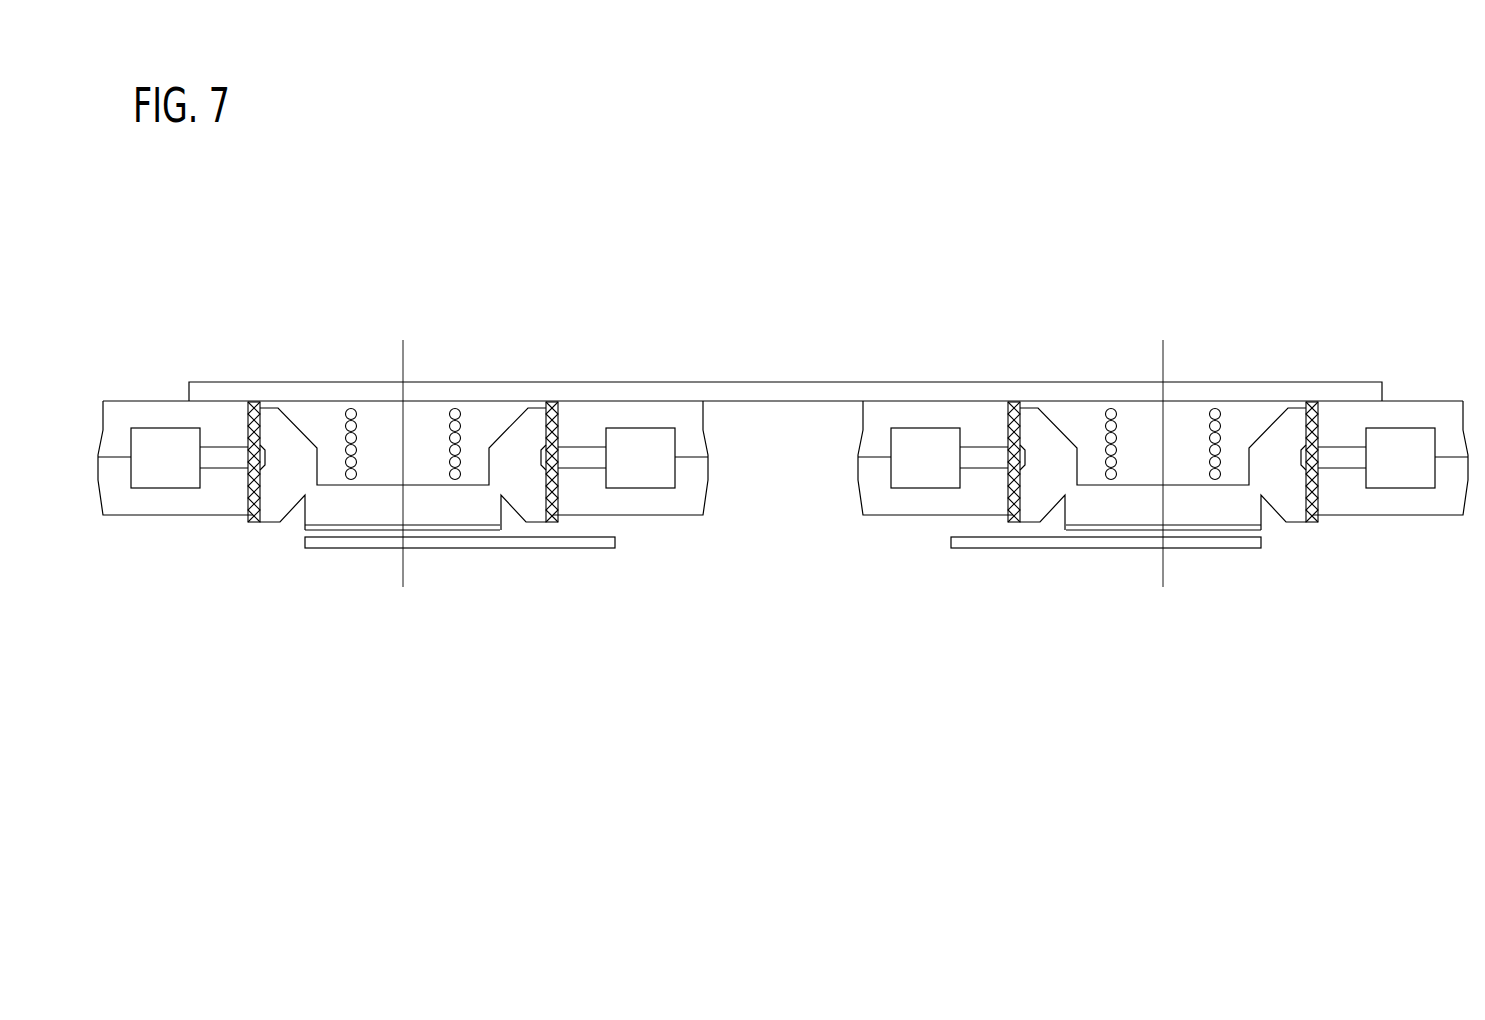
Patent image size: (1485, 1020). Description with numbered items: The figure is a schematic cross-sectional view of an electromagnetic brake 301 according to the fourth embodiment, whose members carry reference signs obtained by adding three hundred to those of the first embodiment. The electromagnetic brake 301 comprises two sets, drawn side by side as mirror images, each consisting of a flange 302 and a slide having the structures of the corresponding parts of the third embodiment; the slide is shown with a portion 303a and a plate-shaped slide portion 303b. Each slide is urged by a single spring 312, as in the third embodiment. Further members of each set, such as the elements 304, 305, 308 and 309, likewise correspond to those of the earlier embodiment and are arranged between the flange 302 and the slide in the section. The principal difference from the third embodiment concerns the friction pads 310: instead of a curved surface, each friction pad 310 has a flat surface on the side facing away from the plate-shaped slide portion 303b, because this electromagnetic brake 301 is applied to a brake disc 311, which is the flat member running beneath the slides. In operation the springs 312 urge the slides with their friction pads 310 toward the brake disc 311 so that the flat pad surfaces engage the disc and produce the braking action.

The electromagnetic brake 301 is at (807, 328).
The flange 302 is at (1418, 390).
The first clamp member 303a is at (1295, 515).
The plate-shaped slide portion 303b is at (1252, 513).
The seal member 304 is at (1310, 520).
The block 305 is at (1415, 477).
The connecting portion 308 is at (1336, 460).
The balls 309 is at (1108, 412).
The friction pad 310 is at (1208, 528).
The brake disc 311 is at (1180, 543).
The spring 312 is at (1138, 387).